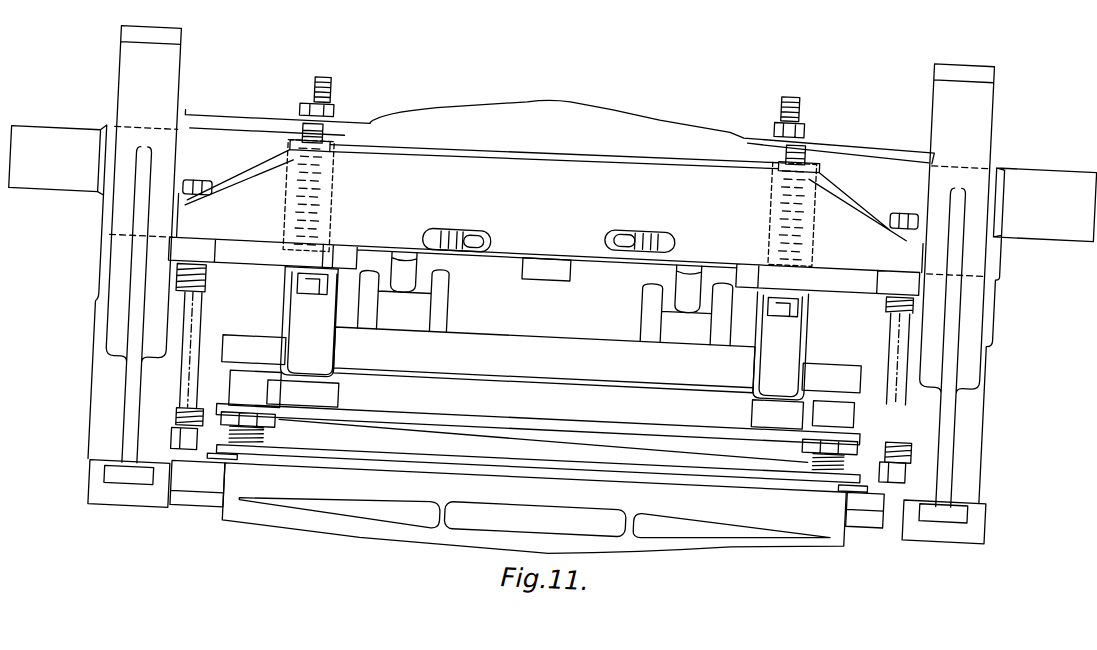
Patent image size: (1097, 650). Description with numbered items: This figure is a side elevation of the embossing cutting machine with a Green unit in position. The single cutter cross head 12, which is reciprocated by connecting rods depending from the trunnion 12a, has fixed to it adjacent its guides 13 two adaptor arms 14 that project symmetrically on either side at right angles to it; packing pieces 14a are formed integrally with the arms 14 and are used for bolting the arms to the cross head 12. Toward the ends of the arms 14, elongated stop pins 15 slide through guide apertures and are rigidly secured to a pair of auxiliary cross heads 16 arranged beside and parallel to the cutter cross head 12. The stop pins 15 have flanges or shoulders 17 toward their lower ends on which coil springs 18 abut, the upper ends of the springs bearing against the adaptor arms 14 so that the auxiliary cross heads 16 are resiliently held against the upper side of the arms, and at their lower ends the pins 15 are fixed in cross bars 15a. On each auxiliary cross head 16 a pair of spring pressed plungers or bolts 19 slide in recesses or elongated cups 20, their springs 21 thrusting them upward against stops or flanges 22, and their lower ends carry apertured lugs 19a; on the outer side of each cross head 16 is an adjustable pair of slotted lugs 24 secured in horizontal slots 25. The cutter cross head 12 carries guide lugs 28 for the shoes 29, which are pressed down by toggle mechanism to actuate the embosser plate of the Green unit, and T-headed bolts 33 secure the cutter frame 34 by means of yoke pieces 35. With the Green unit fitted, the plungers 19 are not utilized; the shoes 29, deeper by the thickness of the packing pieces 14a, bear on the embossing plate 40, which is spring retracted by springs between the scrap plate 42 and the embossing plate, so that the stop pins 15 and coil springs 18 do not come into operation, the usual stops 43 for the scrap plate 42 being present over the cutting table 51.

The cutter cross head 12 is at (571, 121).
The trunnion 12a is at (548, 315).
The guides 13 is at (121, 281).
The adaptor arms 14 is at (205, 265).
The packing pieces 14a is at (350, 254).
The stop pins 15 is at (200, 345).
The cross bars 15a is at (1000, 458).
The auxiliary cross heads 16 is at (427, 177).
The flanges or shoulders 17 is at (182, 447).
The coil springs 18 is at (175, 430).
The spring pressed plungers or bolts 19 is at (318, 231).
The apertured lugs 19a is at (302, 307).
The recesses or elongated cups 20 is at (283, 210).
The springs 21 is at (326, 199).
The stops or flanges 22 is at (282, 291).
The slotted lugs 24 is at (456, 235).
The horizontal slots 25 is at (478, 240).
The guide lugs 28 is at (395, 258).
The shoes 29 is at (431, 315).
The T-headed bolts 33 is at (322, 107).
The cutter frame 34 is at (509, 391).
The yoke pieces 35 is at (318, 358).
The embossing plate 40 is at (582, 349).
The scrap plate 42 is at (570, 453).
The stops 43 is at (905, 532).
The cutting table 51 is at (300, 486).